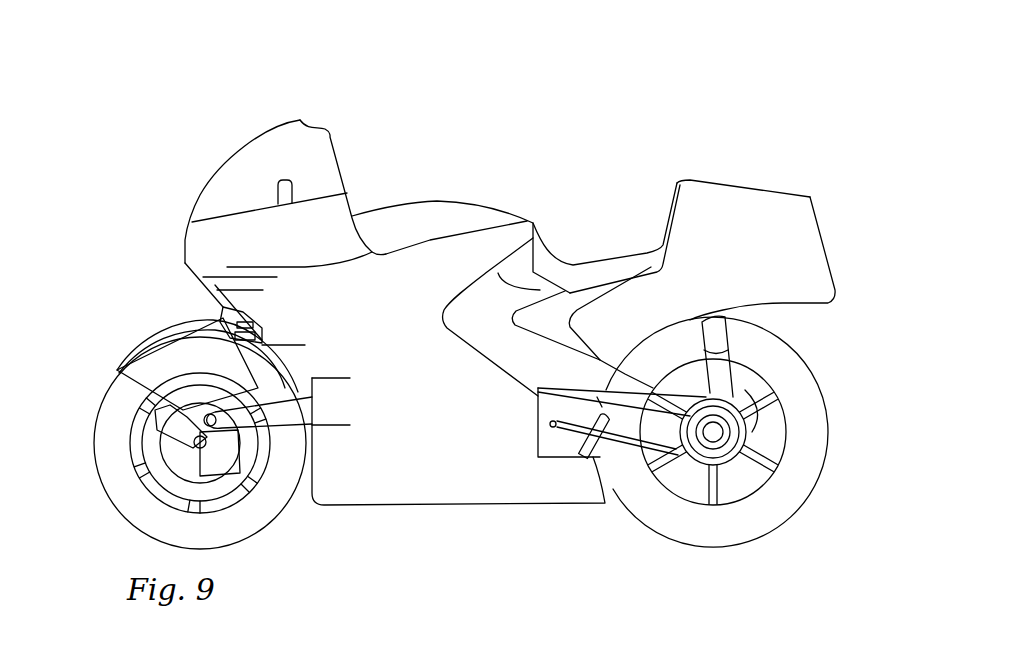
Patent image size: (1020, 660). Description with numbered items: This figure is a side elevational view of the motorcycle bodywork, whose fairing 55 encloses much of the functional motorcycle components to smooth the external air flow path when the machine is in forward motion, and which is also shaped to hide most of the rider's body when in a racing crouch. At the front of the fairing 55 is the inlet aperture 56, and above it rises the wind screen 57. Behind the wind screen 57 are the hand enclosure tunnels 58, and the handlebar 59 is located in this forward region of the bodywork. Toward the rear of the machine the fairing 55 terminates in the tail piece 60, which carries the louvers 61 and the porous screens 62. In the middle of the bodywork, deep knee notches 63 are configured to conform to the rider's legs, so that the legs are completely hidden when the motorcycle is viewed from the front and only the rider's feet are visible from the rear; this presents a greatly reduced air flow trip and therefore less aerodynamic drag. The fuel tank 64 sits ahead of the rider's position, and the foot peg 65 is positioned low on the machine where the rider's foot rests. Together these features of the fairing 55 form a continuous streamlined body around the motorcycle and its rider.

The fairing 55 is at (190, 237).
The inlet aperture 56 is at (215, 297).
The wind screen 57 is at (223, 163).
The hand enclosure tunnels 58 is at (327, 210).
The handlebar 59 is at (290, 180).
The tail piece 60 is at (712, 182).
The louvers 61 is at (788, 190).
The porous screens 62 is at (817, 213).
The knee notches 63 is at (490, 273).
The fuel tank 64 is at (408, 485).
The foot peg 65 is at (598, 420).